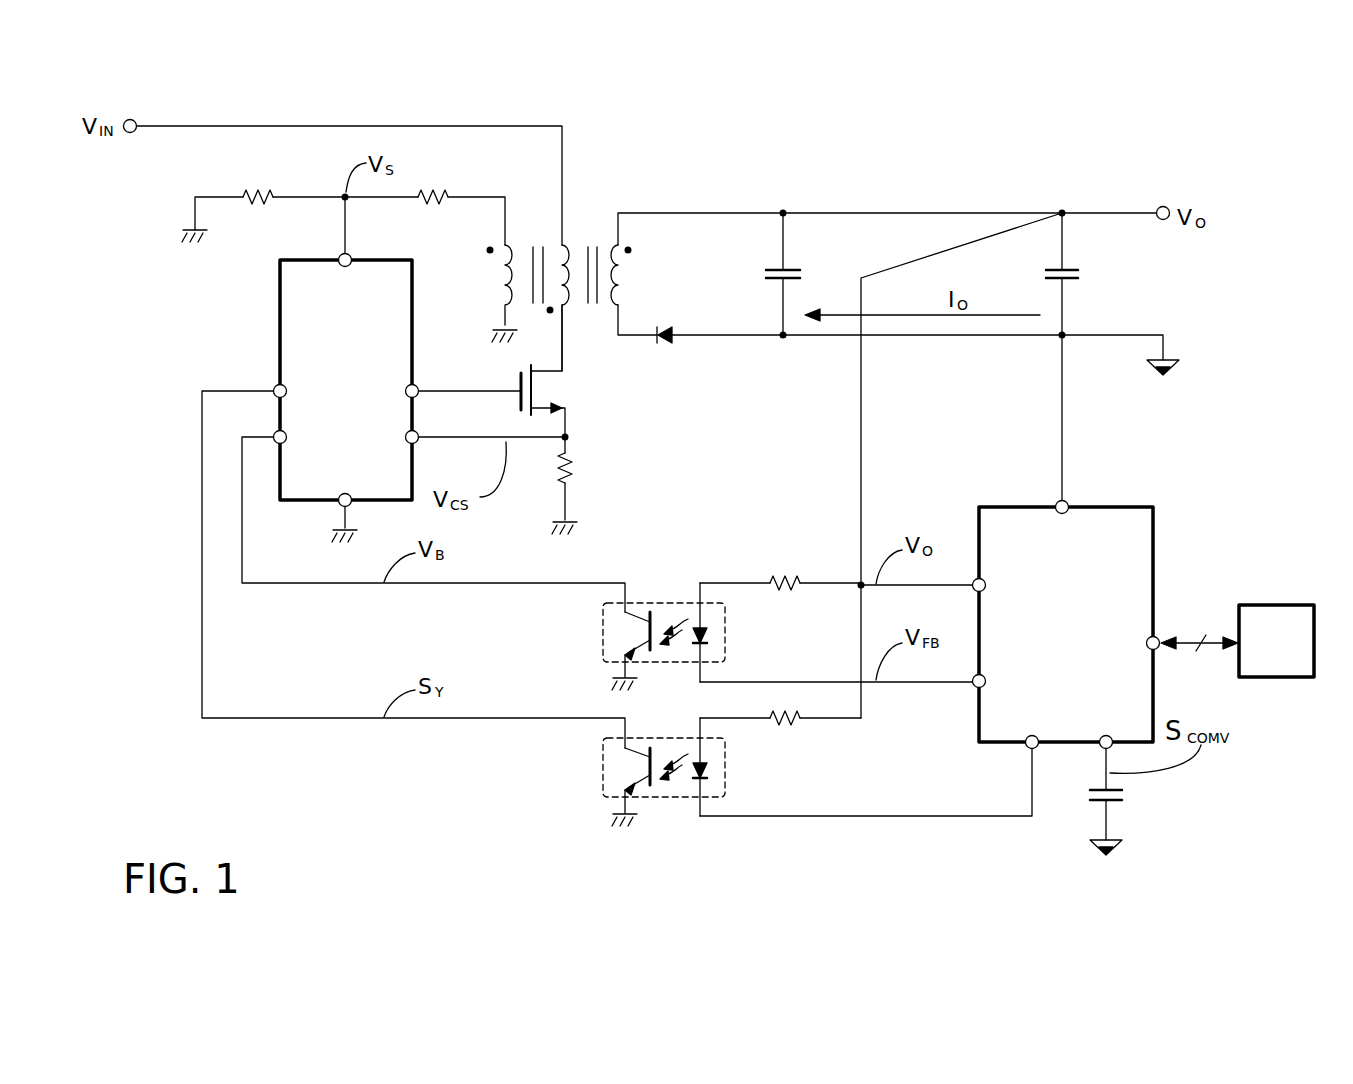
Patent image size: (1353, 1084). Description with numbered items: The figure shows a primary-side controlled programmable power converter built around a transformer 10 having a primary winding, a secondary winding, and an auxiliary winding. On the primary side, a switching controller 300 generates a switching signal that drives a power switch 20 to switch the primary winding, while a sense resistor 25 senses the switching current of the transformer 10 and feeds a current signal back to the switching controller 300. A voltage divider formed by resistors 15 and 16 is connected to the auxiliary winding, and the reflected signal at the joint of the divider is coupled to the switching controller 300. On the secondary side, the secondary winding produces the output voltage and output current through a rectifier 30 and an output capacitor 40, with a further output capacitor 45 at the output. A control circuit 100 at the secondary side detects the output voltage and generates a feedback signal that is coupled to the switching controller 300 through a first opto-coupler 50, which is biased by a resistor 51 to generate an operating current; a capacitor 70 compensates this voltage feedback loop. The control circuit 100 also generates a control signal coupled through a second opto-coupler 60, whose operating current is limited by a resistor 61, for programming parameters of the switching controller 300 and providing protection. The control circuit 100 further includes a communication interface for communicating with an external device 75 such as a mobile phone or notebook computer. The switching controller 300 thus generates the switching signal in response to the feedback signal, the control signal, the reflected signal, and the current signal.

The transformer 10 is at (578, 235).
The resistor 15 is at (437, 186).
The resistor 16 is at (262, 186).
The power switch 20 is at (566, 390).
The sense resistor 25 is at (580, 478).
The rectifier 30 is at (668, 347).
The output capacitor 40 is at (767, 272).
The output capacitor 45 is at (1080, 272).
The first opto-coupler 50 is at (603, 628).
The resistor 51 is at (783, 568).
The second opto-coupler 60 is at (603, 763).
The resistor 61 is at (787, 735).
The capacitor 70 is at (1124, 795).
The external device 75 is at (1273, 604).
The control circuit 100 is at (1116, 506).
The switching controller 300 is at (280, 318).